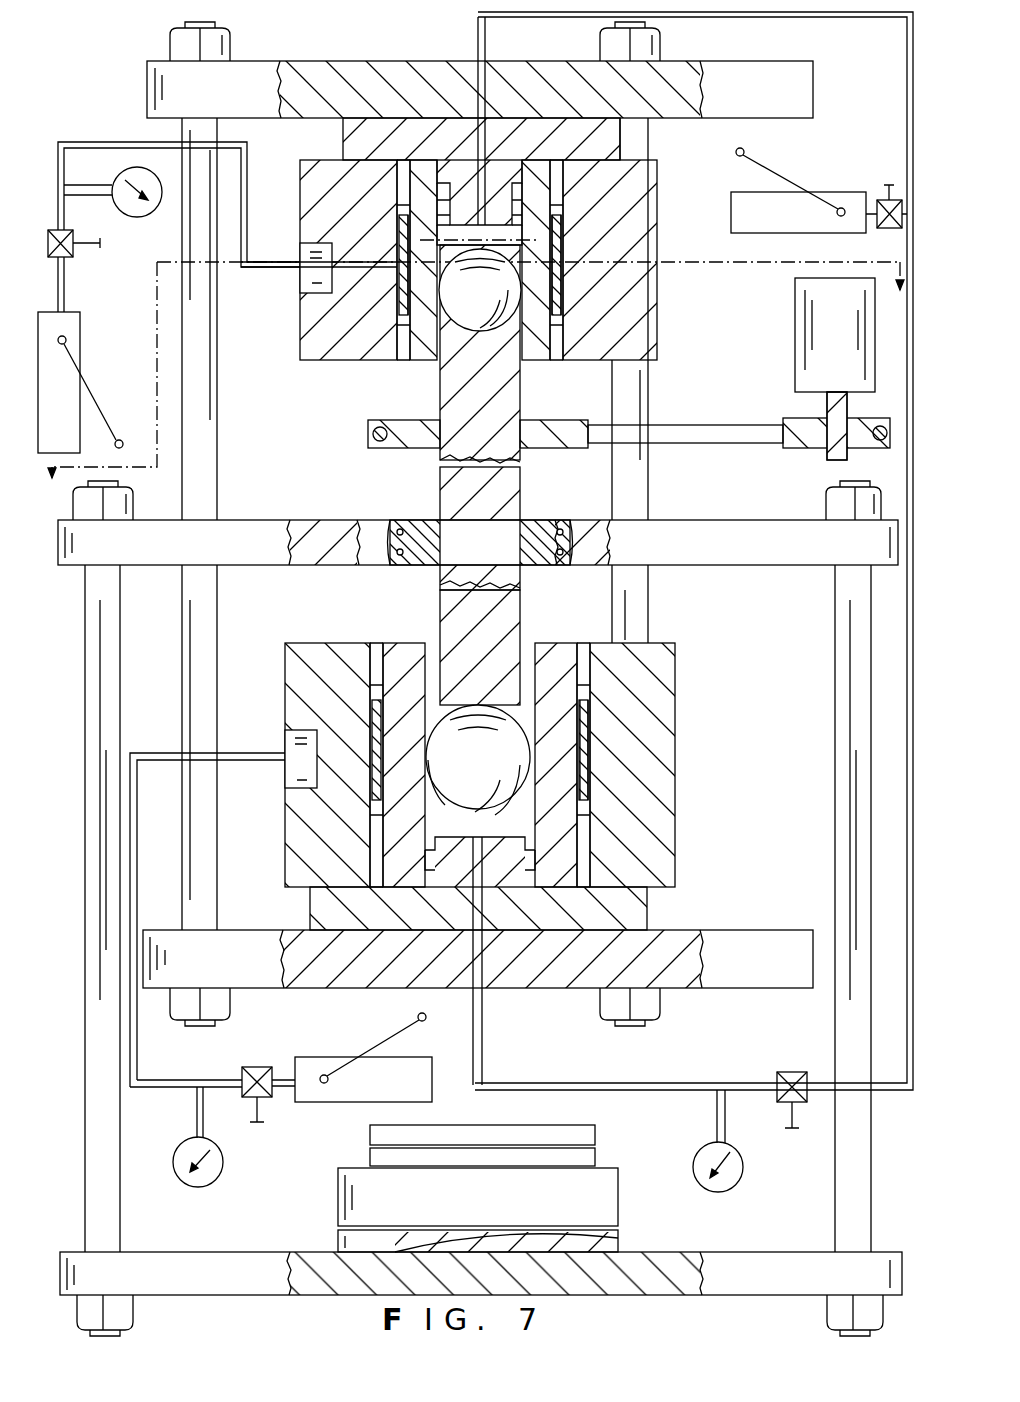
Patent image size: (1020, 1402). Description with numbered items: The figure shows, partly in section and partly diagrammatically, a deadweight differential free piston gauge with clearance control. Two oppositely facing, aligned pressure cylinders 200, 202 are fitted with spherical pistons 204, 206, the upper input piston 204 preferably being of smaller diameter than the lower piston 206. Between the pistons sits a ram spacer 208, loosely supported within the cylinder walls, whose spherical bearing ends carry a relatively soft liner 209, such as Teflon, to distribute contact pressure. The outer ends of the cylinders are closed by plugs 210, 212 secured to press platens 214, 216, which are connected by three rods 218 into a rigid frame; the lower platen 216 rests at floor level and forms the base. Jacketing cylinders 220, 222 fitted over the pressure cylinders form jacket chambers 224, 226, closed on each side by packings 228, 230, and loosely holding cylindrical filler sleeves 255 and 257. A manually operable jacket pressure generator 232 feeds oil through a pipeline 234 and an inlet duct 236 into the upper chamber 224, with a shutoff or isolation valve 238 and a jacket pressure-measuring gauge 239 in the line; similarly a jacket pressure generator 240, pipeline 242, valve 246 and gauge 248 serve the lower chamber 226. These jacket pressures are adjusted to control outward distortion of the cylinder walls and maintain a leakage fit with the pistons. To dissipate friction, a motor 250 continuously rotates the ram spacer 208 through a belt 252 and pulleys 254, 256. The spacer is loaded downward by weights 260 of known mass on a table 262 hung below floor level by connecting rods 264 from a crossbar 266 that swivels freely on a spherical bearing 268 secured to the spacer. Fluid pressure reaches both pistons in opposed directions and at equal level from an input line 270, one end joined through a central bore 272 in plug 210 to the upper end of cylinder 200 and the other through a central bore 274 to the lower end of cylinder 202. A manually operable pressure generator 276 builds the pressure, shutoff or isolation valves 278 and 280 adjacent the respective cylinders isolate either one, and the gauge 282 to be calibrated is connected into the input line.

The pressure cylinder 200 is at (418, 175).
The pressure cylinder 202 is at (540, 828).
The spherical piston 204 is at (500, 300).
The spherical piston 206 is at (498, 767).
The ram spacer 208 is at (505, 465).
The liner 209 is at (455, 360).
The plug 210 is at (605, 135).
The plug 212 is at (640, 908).
The press platen 214 is at (358, 60).
The press platen 216 is at (305, 940).
The rods 218 is at (217, 468).
The jacketing cylinder 220 is at (340, 344).
The jacketing cylinder 222 is at (300, 835).
The jacket chamber 224 is at (580, 225).
The jacket chamber 226 is at (590, 725).
The packings 228 is at (400, 208).
The packings 230 is at (575, 305).
The jacket pressure generator 232 is at (80, 338).
The pipeline 234 is at (95, 140).
The inlet duct 236 is at (345, 282).
The shutoff or isolation valve 238 is at (68, 260).
The jacket pressure-measuring gauge 239 is at (135, 210).
The jacket pressure generator 240 is at (320, 1060).
The pipeline 242 is at (163, 752).
The shutoff or isolation valve 246 is at (262, 1067).
The jacket pressure-measuring gauge 248 is at (218, 1172).
The motor 250 is at (822, 332).
The belt 252 is at (748, 430).
The pulley 254 is at (795, 448).
The cylindrical filler sleeve 255 is at (405, 235).
The pulley 256 is at (400, 425).
The cylindrical filler sleeve 257 is at (590, 790).
The weights 260 is at (390, 1200).
The table 262 is at (282, 1255).
The connecting rods 264 is at (90, 602).
The crossbar 266 is at (790, 522).
The spherical bearing 268 is at (430, 528).
The input line 270 is at (660, 17).
The central bore 272 is at (490, 80).
The central bore 274 is at (485, 940).
The pressure generator 276 is at (857, 192).
The shutoff or isolation valve 278 is at (895, 198).
The shutoff or isolation valve 280 is at (790, 1072).
The gauge to be calibrated 282 is at (740, 1175).